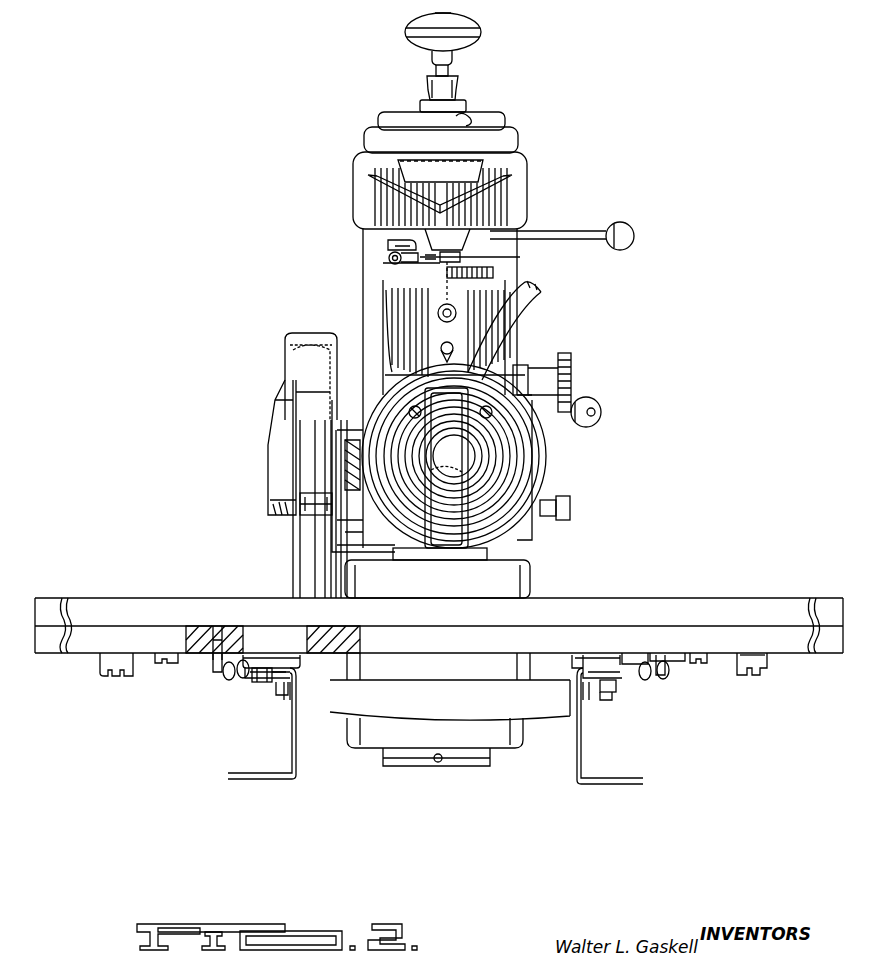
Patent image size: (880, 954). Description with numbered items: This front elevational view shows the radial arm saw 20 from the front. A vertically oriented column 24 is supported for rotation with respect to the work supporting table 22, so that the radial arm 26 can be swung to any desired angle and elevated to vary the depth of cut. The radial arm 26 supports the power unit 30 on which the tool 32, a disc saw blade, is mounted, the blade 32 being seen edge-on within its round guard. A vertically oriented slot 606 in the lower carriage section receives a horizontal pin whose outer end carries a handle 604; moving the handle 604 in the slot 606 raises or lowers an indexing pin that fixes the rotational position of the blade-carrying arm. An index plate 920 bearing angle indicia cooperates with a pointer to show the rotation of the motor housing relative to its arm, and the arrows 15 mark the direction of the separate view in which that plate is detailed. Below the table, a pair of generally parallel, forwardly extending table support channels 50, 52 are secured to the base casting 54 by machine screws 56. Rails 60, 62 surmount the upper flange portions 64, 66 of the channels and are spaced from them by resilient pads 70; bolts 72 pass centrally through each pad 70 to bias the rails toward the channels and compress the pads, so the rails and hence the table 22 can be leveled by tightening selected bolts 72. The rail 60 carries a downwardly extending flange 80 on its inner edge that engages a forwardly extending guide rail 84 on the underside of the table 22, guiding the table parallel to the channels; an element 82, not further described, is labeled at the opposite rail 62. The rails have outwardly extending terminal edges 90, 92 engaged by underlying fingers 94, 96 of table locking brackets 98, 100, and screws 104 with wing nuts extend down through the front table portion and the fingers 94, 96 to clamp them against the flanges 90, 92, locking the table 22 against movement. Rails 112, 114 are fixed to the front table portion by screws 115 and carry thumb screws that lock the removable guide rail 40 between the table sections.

The radial arm saw 20 is at (259, 259).
The radial arm 26 is at (534, 171).
The vertically oriented slot 606 is at (388, 244).
The handle 604 is at (389, 259).
The section line indicator 15 is at (478, 262).
The index plate 920 is at (520, 385).
The power unit 30 is at (543, 473).
The tool 32 is at (304, 553).
The column 24 is at (508, 557).
The guide rail 40 is at (618, 590).
The work supporting table 22 is at (653, 615).
The screws 104 is at (222, 635).
The terminal edge 90 is at (224, 648).
The guide rail 84 is at (300, 650).
The downwardly extending flange 80 is at (285, 661).
The clamp plate 82 is at (580, 665).
The terminal edge 92 is at (645, 658).
The rail 112 is at (98, 684).
The table locking bracket 98 is at (184, 666).
The finger 94 is at (227, 670).
The rail 60 is at (246, 672).
The upper flange portion 64 is at (256, 697).
The bolt 72 is at (282, 704).
The machine screws 56 is at (282, 718).
The table support channel 50 is at (283, 748).
The table support channel 52 is at (593, 760).
The base casting 54 is at (368, 753).
The resilient pad 70 is at (300, 672).
The upper flange portion 66 is at (614, 700).
The rail 62 is at (655, 683).
The finger 96 is at (667, 669).
The table locking bracket 100 is at (692, 663).
The rail 114 is at (774, 683).
The screws 115 is at (755, 670).